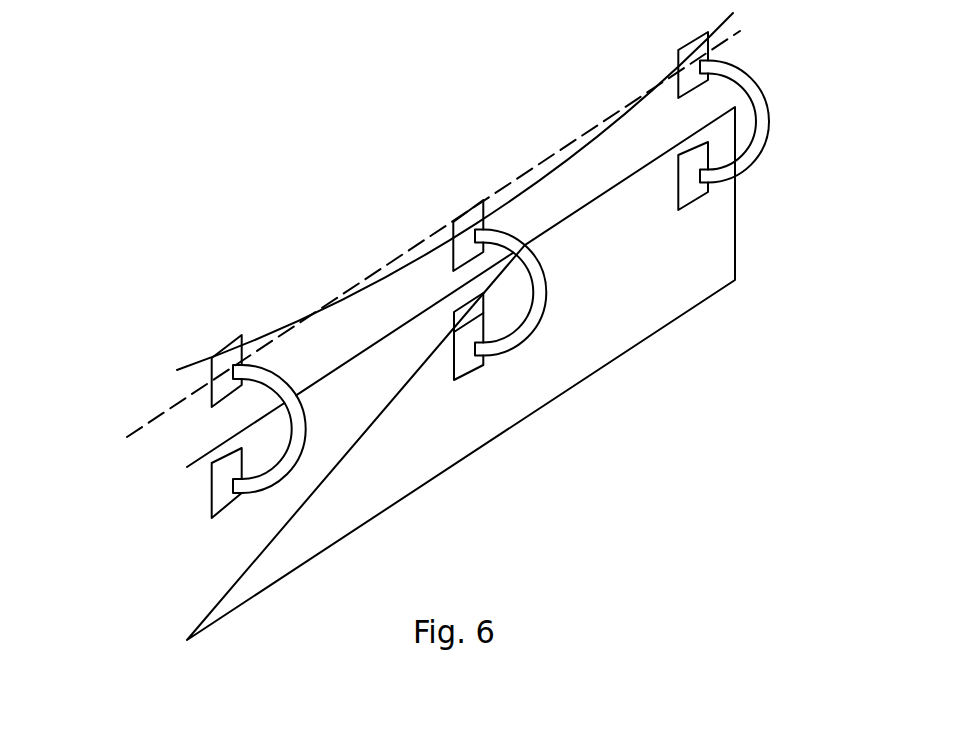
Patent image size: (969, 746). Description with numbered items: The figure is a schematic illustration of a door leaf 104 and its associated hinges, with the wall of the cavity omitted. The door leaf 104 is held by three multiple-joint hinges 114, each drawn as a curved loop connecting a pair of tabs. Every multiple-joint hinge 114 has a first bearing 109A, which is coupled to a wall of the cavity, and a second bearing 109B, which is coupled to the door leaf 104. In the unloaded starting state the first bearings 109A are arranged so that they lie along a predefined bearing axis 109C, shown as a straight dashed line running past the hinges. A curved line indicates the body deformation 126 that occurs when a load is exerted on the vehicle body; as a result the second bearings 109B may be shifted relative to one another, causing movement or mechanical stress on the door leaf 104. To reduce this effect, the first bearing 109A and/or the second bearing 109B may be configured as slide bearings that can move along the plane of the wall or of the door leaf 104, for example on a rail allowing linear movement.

The door leaf 104 is at (700, 243).
The body deformation 126 is at (257, 337).
The first bearing 109A is at (467, 215).
The second bearing 109B is at (483, 363).
The bearing axis 109C is at (170, 405).
The multiple-joint hinge 114 is at (302, 412).